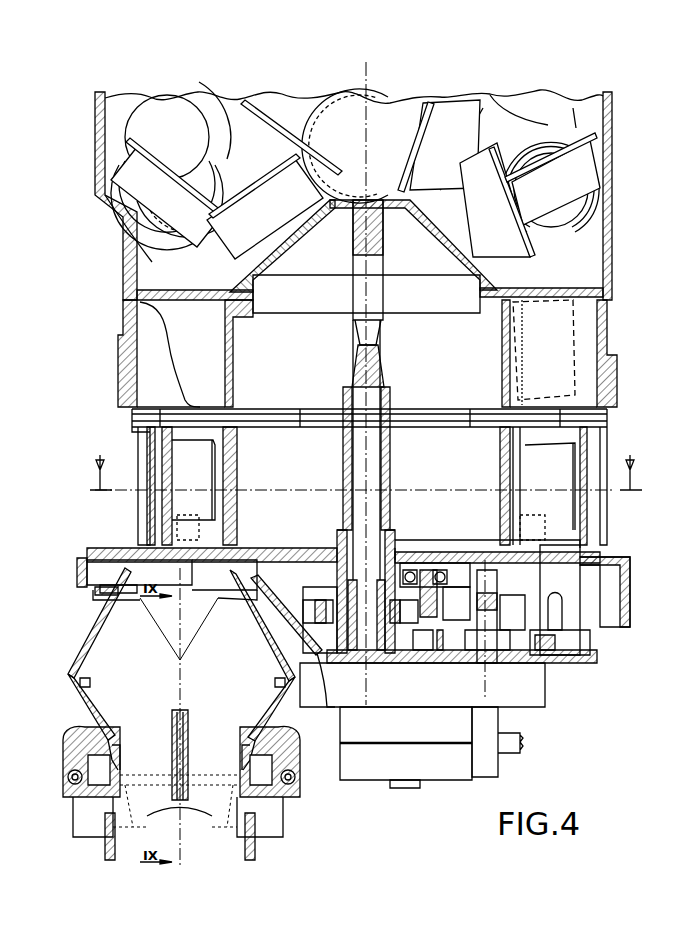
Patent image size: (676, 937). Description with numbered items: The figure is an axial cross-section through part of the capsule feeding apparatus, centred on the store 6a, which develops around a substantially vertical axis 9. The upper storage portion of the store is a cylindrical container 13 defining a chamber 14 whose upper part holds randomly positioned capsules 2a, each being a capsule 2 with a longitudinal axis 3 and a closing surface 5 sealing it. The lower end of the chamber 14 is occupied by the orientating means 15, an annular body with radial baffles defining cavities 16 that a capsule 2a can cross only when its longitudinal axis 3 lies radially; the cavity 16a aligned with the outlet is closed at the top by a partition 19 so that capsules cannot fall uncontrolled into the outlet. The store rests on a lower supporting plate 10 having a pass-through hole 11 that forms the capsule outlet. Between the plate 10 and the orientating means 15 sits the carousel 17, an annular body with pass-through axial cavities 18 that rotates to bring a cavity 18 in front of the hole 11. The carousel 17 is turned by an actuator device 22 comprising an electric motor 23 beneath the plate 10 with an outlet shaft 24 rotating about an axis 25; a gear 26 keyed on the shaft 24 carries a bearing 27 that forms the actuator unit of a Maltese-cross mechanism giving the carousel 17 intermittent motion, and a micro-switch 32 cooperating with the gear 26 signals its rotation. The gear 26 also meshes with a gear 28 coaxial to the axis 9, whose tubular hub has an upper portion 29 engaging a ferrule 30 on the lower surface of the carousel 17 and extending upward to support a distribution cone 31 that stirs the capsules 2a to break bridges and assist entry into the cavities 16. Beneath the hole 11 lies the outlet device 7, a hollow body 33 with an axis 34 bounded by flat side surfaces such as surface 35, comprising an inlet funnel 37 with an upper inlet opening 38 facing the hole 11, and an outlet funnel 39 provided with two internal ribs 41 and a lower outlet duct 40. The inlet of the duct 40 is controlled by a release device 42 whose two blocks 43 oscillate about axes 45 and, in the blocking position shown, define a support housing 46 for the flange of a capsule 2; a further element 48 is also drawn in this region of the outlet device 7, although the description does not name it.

The store 6a is at (94, 128).
The container 13 is at (104, 166).
The chamber 14 is at (206, 112).
The capsule 2 is at (262, 148).
The axis 9 is at (356, 122).
The distribution cone 31 is at (306, 230).
The partition 19 is at (182, 298).
The orientating means 15 is at (118, 374).
The cavity aligned with outlet hole 16a is at (142, 364).
The cavities 16 is at (597, 348).
The closing surface 5 is at (172, 465).
The capsule 2a is at (208, 452).
The longitudinal axis 3 is at (203, 490).
The pass-through axial cavities 18 is at (214, 522).
The upper portion 29 is at (390, 462).
The ferrule 30 is at (398, 544).
The carousel 17 is at (130, 508).
The pass-through hole 11 is at (131, 552).
The upper inlet opening 38 is at (143, 582).
The outlet device 7 is at (74, 642).
The flat side surface 35 is at (130, 637).
The inlet funnel 37 is at (82, 650).
The internal ribs 41 is at (88, 684).
The hollow body 33 is at (72, 694).
The outlet funnel 39 is at (86, 697).
The axis 34 is at (185, 690).
The tongue 48 is at (184, 732).
The lower outlet duct 40 is at (118, 750).
The support housing 46 is at (238, 760).
The release device 42 is at (296, 790).
The axes 45 is at (70, 790).
The blocks 43 is at (96, 792).
The gear 28 is at (322, 632).
The bearing 27 is at (438, 572).
The outlet shaft 24 is at (492, 646).
The axis 25 is at (488, 680).
The gear 26 is at (590, 598).
The lower supporting plate 10 is at (598, 566).
The micro-switch 32 is at (572, 642).
The actuator device 22 is at (530, 718).
The electric motor 23 is at (462, 735).